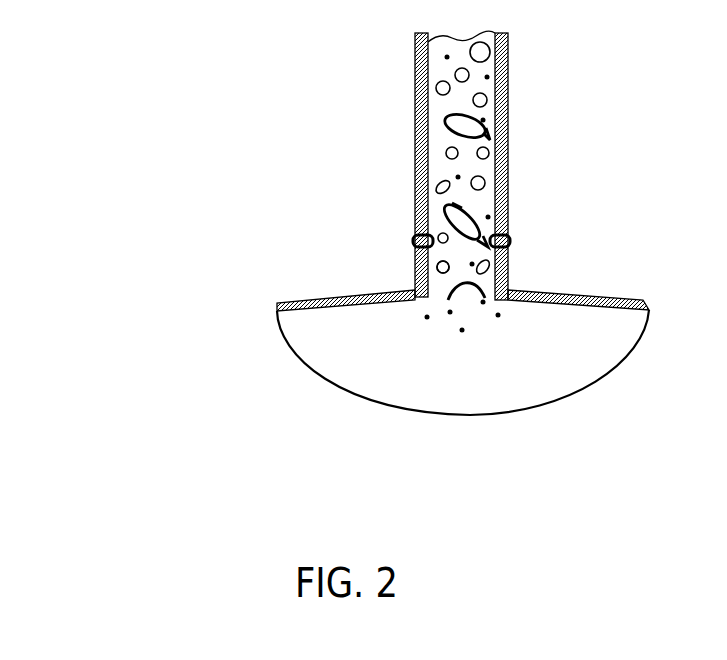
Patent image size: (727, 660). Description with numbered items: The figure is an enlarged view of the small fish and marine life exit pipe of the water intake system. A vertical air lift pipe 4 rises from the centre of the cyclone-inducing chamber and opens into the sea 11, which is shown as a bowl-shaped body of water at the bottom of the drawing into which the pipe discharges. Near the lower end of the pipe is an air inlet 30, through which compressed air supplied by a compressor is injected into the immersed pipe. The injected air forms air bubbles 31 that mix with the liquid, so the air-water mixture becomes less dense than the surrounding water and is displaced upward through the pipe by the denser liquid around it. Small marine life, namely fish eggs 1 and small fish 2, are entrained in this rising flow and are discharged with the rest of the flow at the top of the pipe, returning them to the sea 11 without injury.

The fish eggs 1 is at (437, 47).
The small fish 2 is at (435, 121).
The air lift pipe 4 is at (418, 168).
The sea 11 is at (545, 370).
The air inlet 30 is at (417, 240).
The air bubble 31 is at (435, 270).